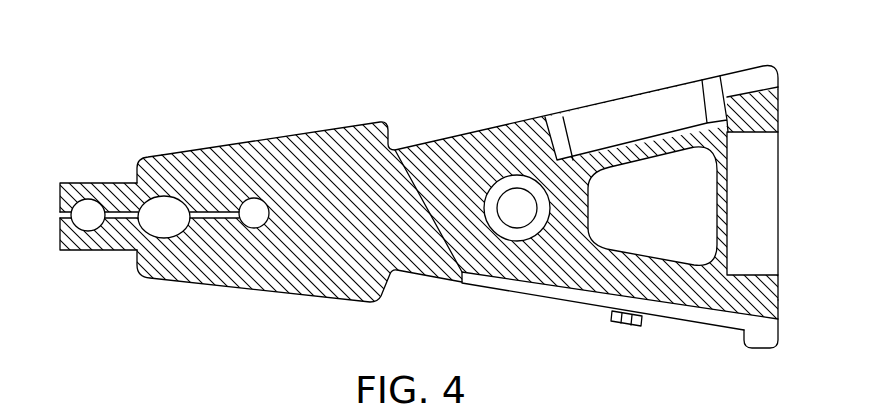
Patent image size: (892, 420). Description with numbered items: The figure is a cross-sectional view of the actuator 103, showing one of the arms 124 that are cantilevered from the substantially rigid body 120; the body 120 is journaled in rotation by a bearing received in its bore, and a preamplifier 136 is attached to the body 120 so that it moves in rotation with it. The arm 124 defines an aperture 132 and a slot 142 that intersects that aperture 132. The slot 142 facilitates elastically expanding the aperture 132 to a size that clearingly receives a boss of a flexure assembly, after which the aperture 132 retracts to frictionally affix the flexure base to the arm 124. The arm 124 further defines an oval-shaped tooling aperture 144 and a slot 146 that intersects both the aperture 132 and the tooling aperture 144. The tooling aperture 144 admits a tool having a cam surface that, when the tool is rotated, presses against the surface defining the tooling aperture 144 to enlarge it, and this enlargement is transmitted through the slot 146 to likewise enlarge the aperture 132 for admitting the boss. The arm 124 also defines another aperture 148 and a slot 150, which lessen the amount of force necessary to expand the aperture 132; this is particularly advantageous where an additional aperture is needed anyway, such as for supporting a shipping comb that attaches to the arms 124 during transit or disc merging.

The actuator 103 is at (236, 90).
The body 120 is at (782, 302).
The arm 124 is at (268, 290).
The aperture 132 is at (73, 190).
The preamplifier 136 is at (697, 330).
The slot 142 is at (67, 222).
The tooling aperture 144 is at (138, 182).
The slot 146 is at (110, 219).
The aperture 148 is at (240, 205).
The slot 150 is at (230, 213).